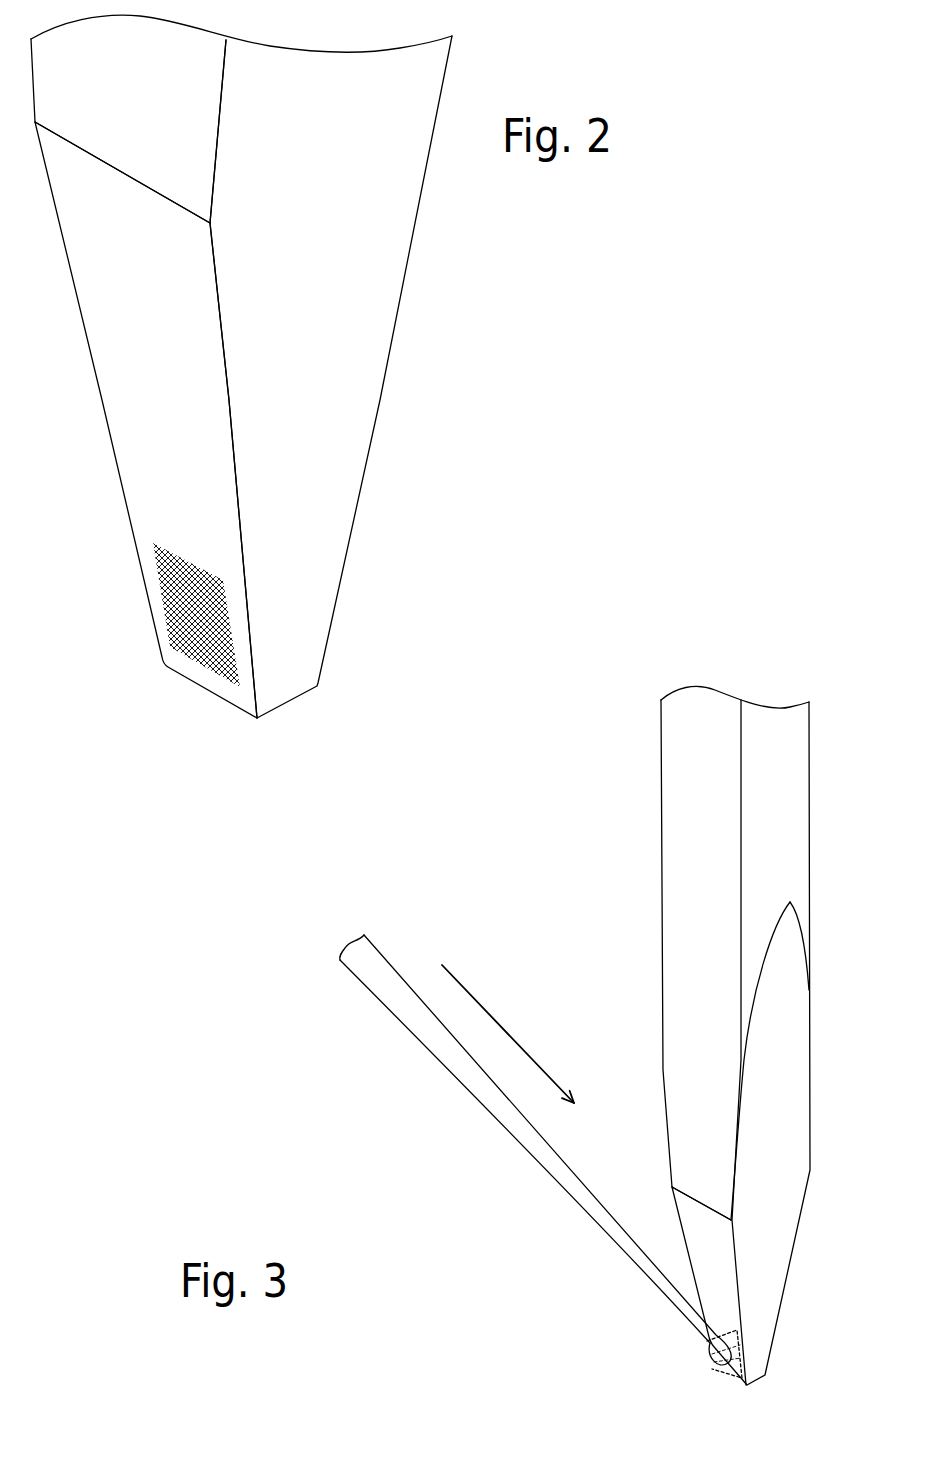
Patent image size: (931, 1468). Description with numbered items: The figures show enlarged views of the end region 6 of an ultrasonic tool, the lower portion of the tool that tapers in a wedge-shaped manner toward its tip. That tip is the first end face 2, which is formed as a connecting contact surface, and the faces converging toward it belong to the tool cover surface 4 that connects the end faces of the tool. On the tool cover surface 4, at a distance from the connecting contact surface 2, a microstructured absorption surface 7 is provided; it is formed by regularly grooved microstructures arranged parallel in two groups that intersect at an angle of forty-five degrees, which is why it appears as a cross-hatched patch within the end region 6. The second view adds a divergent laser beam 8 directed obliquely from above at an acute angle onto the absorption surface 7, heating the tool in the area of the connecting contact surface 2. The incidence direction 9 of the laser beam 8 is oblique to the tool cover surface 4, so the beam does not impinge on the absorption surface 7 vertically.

In FIG. 2, the first end face 2 is at (230, 707).
In FIG. 2, the tool cover surface 4 is at (195, 485).
In FIG. 3, the tool cover surface 4 is at (685, 907).
In FIG. 2, the end region 6 is at (488, 407).
In FIG. 3, the end region 6 is at (563, 1275).
In FIG. 2, the microstructured absorption surface 7 is at (167, 608).
In FIG. 3, the microstructured absorption surface 7 is at (733, 1329).
In FIG. 3, the divergent laser beam 8 is at (410, 1012).
In FIG. 3, the incidence direction 9 is at (497, 1018).